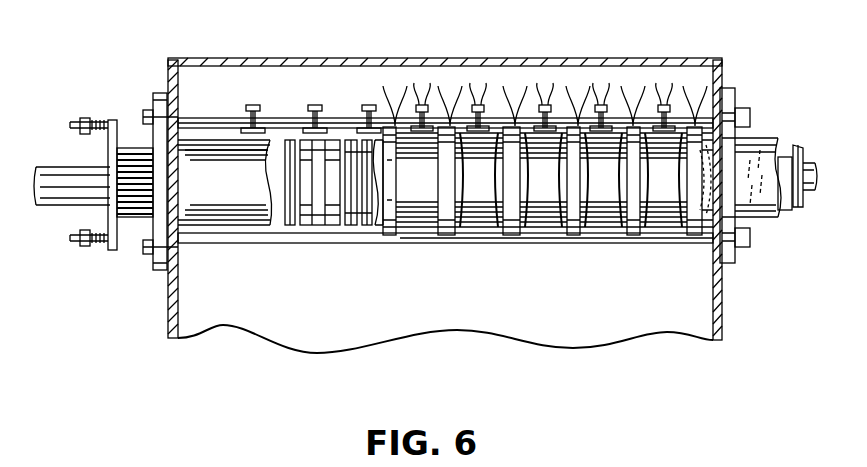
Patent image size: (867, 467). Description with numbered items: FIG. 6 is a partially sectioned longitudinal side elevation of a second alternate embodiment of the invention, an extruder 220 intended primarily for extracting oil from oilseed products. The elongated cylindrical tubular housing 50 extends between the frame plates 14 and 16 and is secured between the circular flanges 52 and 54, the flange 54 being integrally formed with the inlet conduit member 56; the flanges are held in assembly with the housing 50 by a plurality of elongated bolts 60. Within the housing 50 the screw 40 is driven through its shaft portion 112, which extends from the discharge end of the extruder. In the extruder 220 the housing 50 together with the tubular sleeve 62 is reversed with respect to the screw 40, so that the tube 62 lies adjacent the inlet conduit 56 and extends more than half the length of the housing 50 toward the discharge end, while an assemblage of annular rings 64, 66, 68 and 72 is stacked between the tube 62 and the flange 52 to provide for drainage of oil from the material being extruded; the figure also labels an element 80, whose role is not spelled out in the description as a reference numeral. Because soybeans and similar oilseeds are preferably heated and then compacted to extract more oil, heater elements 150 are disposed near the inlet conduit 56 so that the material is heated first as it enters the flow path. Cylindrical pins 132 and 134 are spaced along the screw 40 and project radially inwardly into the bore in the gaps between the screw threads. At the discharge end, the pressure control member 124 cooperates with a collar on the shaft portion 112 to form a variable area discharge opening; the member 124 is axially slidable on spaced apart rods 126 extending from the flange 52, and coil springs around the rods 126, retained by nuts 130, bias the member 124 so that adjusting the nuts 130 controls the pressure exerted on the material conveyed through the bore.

The plate 14 is at (170, 300).
The plate 16 is at (722, 300).
The extruder 220 is at (500, 36).
The shaft portion 112 is at (52, 180).
The member 124 is at (137, 215).
The rods 126 is at (70, 125).
The nuts 130 is at (86, 117).
The circular flange 52 is at (159, 92).
The elongated bolts 60 is at (192, 120).
The tubular housing 50 is at (502, 243).
The tube 80 is at (300, 140).
The annular ring 72 is at (243, 225).
The annular ring 68 is at (288, 228).
The annular ring 66 is at (320, 228).
The annular ring 64 is at (352, 140).
The tubular sleeve 62 is at (390, 236).
The cylindrical pins 134 is at (255, 105).
The cylindrical pins 132 is at (424, 105).
The heater elements 150 is at (455, 175).
The circular flange 54 is at (728, 88).
The inlet conduit member 56 is at (770, 136).
The screw 40 is at (804, 195).